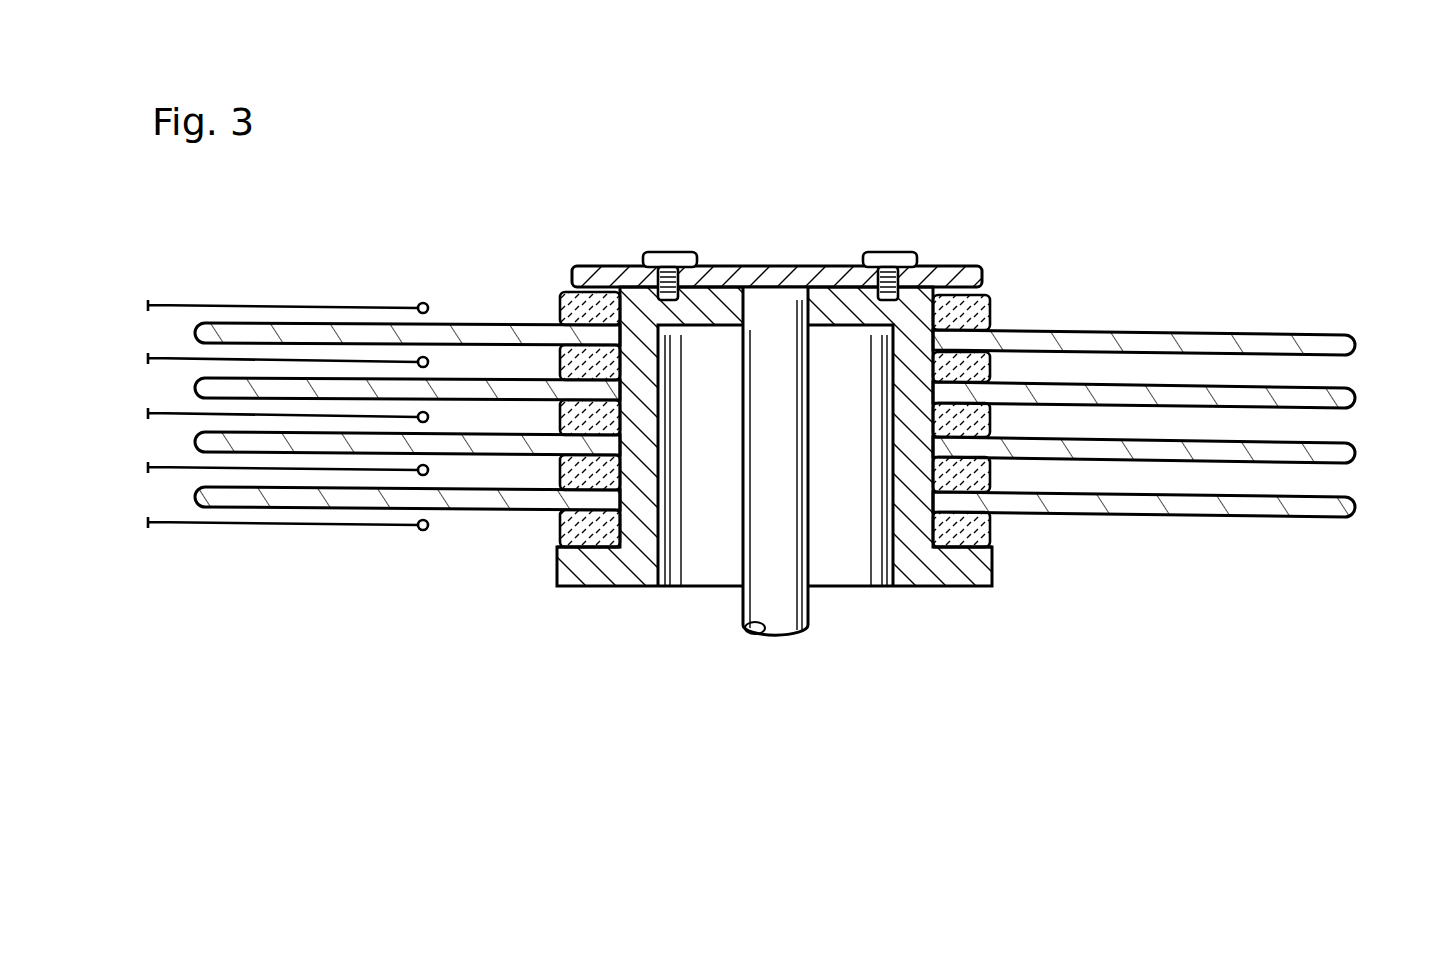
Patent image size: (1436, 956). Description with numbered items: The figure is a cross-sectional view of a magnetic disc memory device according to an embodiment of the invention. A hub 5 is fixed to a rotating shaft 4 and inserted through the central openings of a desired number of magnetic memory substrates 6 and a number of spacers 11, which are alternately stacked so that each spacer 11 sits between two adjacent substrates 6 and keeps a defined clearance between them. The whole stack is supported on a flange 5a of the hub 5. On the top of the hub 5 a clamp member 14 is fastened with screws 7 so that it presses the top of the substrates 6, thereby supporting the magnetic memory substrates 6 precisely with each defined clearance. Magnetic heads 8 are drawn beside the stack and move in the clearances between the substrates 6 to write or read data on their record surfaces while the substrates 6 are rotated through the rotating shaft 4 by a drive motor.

The rotating shaft 4 is at (806, 607).
The hub 5 is at (930, 590).
The flange 5a is at (1013, 600).
The magnetic memory substrate 6 is at (1380, 530).
The screw 7 is at (888, 262).
The lead wire 8 is at (452, 545).
The spacer 11 is at (1020, 540).
The clamp member 14 is at (975, 265).